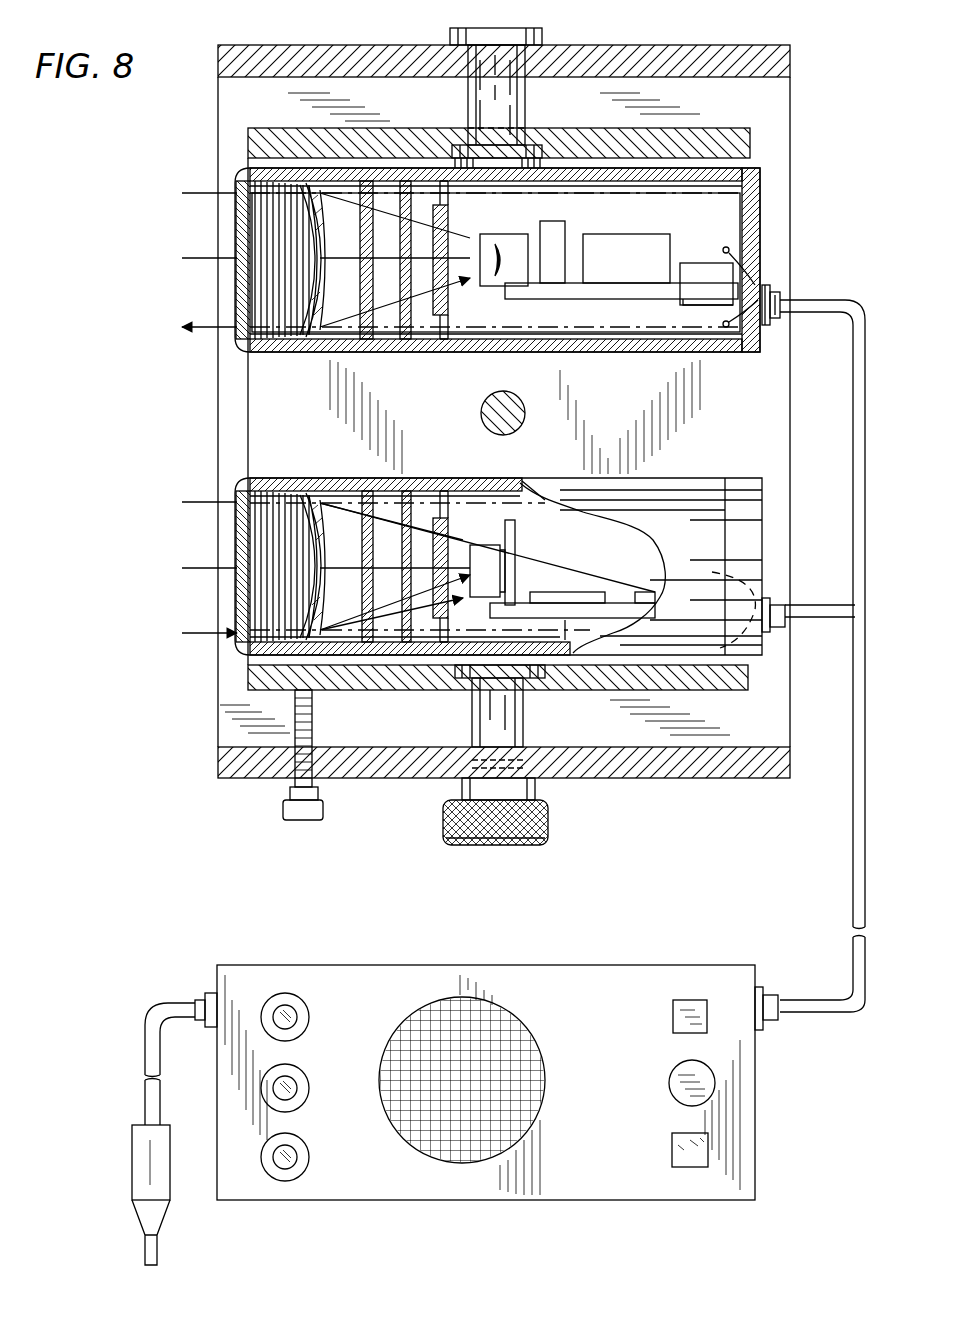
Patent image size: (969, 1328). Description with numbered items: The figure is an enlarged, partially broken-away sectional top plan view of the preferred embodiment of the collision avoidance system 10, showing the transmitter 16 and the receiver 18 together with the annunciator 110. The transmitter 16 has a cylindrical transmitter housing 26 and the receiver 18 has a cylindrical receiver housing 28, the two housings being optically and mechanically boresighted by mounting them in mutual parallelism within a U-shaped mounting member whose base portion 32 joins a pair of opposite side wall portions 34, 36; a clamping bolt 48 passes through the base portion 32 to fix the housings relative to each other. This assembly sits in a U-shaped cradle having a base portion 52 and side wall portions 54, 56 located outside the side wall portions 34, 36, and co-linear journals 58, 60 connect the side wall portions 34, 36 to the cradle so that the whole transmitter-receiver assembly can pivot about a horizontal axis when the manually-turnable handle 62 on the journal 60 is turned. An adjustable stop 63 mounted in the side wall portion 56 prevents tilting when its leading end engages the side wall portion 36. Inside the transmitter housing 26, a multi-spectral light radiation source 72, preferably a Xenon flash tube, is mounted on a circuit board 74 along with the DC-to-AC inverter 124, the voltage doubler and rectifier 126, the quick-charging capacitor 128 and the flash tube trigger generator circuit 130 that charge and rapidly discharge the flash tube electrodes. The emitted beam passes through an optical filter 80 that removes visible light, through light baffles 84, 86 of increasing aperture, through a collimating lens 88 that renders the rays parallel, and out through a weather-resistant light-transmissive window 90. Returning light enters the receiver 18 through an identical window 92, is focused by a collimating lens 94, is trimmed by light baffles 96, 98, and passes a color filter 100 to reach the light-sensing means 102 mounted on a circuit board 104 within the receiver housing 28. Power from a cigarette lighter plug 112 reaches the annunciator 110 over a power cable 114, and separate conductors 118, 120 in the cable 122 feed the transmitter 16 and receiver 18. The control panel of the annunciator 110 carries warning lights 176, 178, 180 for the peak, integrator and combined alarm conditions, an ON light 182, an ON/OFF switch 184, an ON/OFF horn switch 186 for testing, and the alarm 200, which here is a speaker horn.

The system 10 is at (205, 905).
The transmitter 16 is at (740, 238).
The receiver 18 is at (630, 548).
The transmitter housing 26 is at (610, 345).
The receiver housing 28 is at (522, 480).
The base portion 32 is at (636, 444).
The side wall portion 34 is at (722, 128).
The side wall portion 36 is at (728, 688).
The clamping bolt 48 is at (484, 420).
The base portion 52 is at (667, 742).
The side wall portion 54 is at (622, 50).
The side wall portion 56 is at (640, 765).
The journal 58 is at (523, 102).
The journal 60 is at (512, 722).
The handle 62 is at (548, 830).
The stop 63 is at (323, 812).
The light radiation source 72 is at (505, 252).
The circuit board 74 is at (508, 295).
The optical filter 80 is at (450, 222).
The light baffle 84 is at (408, 340).
The light baffle 86 is at (370, 340).
The collimating lens 88 is at (306, 212).
The light-transmissive window 90 is at (240, 296).
The light-transmissive window 92 is at (240, 605).
The collimating lens 94 is at (310, 530).
The light baffle 96 is at (375, 657).
The light baffle 98 is at (410, 657).
The color filter 100 is at (486, 607).
The light-sensing means 102 is at (500, 570).
The circuit board 104 is at (568, 625).
The annunciator 110 is at (340, 964).
The cigarette lighter plug 112 is at (134, 1170).
The power cable 114 is at (152, 1008).
The conductor 118 is at (768, 288).
The conductor 120 is at (752, 600).
The cable 122 is at (866, 650).
The DC-to-AC inverter 124 is at (696, 262).
The voltage doubler and rectifier 126 is at (688, 312).
The quick-charging capacitor 128 is at (618, 243).
The flash tube trigger generator circuit 130 is at (558, 230).
The warning light 176 is at (280, 1014).
The warning light 178 is at (292, 1080).
The warning light 180 is at (290, 1165).
The ON light 182 is at (708, 1158).
The ON/OFF switch 184 is at (705, 1080).
The ON/OFF horn switch 186 is at (705, 1005).
The alarm 200 is at (475, 1150).